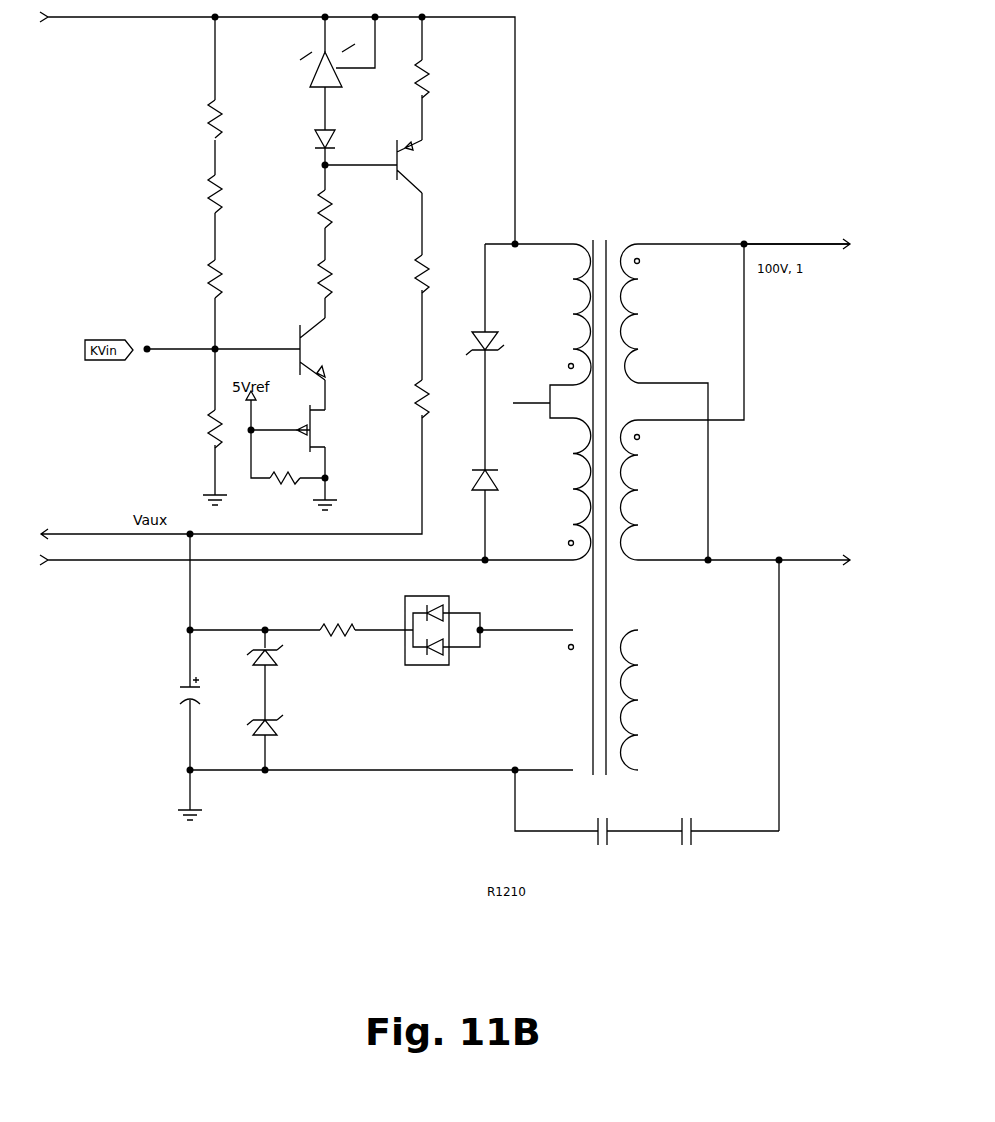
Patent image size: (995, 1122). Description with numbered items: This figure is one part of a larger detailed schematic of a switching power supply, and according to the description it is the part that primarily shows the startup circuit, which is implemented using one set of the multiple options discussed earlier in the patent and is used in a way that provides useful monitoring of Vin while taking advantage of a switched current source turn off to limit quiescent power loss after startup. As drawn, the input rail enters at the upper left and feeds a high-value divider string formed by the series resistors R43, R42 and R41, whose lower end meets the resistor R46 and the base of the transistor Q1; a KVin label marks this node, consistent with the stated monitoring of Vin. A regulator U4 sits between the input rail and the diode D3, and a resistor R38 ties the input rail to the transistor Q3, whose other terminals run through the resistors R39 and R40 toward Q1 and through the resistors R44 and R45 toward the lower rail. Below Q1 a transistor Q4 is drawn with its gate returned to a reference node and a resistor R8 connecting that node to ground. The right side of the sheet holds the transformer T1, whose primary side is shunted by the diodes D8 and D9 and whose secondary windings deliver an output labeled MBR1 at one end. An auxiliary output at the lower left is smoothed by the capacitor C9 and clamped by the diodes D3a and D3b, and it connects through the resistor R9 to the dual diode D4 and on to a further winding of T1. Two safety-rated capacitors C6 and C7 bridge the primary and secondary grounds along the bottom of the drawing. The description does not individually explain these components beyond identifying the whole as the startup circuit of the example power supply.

The resistor 2.00M R43 is at (238, 119).
The resistor 2.00M R42 is at (238, 194).
The resistor 2.00M R41 is at (238, 279).
The resistor 75.0K R46 is at (187, 428).
The resistor 1.21K R38 is at (444, 79).
The resistor 576K R39 is at (346, 209).
The resistor 576K R40 is at (346, 279).
The resistor 75K R44 is at (437, 274).
The resistor 75K R45 is at (437, 399).
The resistor 100K R8 is at (286, 478).
The resistor 10 Ohm R9 is at (333, 610).
The TLV431 shunt regulator U4 is at (298, 73).
The diode MMBT4148 D3 is at (361, 138).
The transistor PBHV9050T Q3 is at (449, 166).
The transistor PMBTA45 Q1 is at (349, 349).
The JFET MMBFJ177 Q4 is at (339, 426).
The zener diode D8 is at (495, 343).
The diode D9 is at (492, 471).
The dual diode BAY70LT1G D4 is at (427, 629).
The zener diode BZX84C11LT1 D3a is at (314, 662).
The zener diode BZX84C11LT1 D3b is at (314, 733).
The capacitor 47uF 100V C9 is at (193, 702).
The capacitor 2200pF X1Y1 C6 is at (615, 832).
The capacitor 2200pF X1Y1 C7 is at (684, 821).
The transformer T1 is at (607, 492).
The output net MBR1 is at (797, 226).